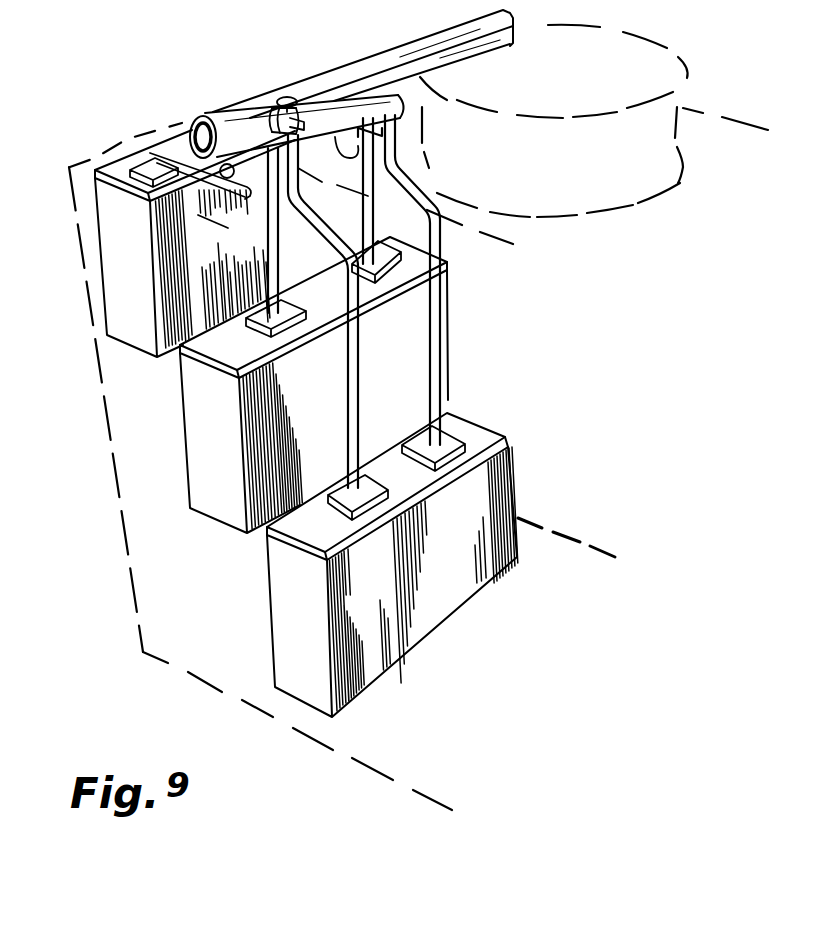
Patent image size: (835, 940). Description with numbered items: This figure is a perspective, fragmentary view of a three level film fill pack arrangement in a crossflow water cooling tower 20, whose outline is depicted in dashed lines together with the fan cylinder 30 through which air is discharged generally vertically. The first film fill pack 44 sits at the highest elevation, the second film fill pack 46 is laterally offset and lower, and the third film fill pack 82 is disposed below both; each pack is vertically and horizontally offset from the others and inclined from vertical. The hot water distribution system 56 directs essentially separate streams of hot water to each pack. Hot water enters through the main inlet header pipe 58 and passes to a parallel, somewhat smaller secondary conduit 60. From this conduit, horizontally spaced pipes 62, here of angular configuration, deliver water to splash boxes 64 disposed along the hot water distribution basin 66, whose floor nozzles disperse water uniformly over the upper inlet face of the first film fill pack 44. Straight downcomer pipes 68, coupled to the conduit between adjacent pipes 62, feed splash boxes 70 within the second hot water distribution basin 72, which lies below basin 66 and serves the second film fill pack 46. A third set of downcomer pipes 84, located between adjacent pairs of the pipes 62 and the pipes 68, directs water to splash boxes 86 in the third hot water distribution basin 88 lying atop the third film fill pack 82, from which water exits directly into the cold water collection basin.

The water cooling tower 20 is at (335, 756).
The fan cylinder 30 is at (635, 170).
The first film fill pack 44 is at (160, 224).
The second film fill pack 46 is at (283, 385).
The hot water distribution system 56 is at (351, 104).
The main inlet header pipe 58 is at (333, 75).
The secondary conduit 60 is at (377, 108).
The upstanding pipes 62 is at (352, 147).
The splash boxes 64 is at (148, 157).
The hot water distribution basin 66 is at (118, 177).
The downcomer pipes 68 is at (275, 217).
The splash boxes 70 is at (280, 303).
The second hot water distribution basin 72 is at (223, 348).
The third film fill pack 82 is at (377, 538).
The third set of downcomer pipes 84 is at (435, 355).
The splash boxes 86 is at (443, 432).
The third hot water distribution basin 88 is at (473, 427).